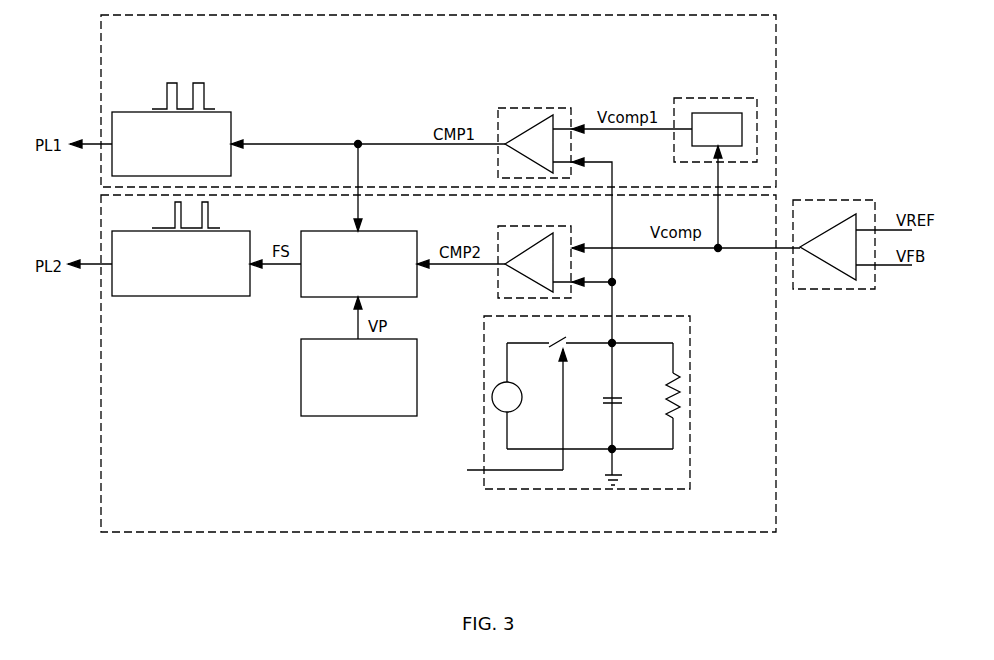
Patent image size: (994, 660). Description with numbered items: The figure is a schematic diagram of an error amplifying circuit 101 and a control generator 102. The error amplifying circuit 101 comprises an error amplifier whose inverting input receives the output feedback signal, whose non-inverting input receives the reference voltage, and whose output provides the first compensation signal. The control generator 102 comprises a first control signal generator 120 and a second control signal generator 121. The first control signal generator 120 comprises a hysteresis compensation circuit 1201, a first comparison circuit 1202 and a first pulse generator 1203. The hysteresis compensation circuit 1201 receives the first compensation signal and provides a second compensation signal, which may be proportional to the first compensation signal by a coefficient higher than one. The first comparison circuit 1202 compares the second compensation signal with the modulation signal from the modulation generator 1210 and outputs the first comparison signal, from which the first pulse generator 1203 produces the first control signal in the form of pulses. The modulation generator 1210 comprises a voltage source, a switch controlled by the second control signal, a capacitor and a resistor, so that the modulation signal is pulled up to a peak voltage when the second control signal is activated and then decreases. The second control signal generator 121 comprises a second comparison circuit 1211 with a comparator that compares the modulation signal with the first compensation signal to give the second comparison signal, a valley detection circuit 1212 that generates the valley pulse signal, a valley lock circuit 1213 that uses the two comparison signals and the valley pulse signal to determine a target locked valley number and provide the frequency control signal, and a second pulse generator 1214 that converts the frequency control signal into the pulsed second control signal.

The error amplifying circuit 101 is at (863, 200).
The control generator 102 is at (102, 220).
The first control signal generator 120 is at (438, 101).
The second control signal generator 121 is at (438, 363).
The hysteresis compensation circuit 1201 is at (716, 98).
The first comparison circuit 1202 is at (528, 108).
The first pulse generator 1203 is at (233, 117).
The modulation generator 1210 is at (533, 490).
The second comparison circuit 1211 is at (498, 276).
The valley detection circuit 1212 is at (318, 417).
The valley lock circuit 1213 is at (318, 298).
The second pulse generator 1214 is at (177, 297).